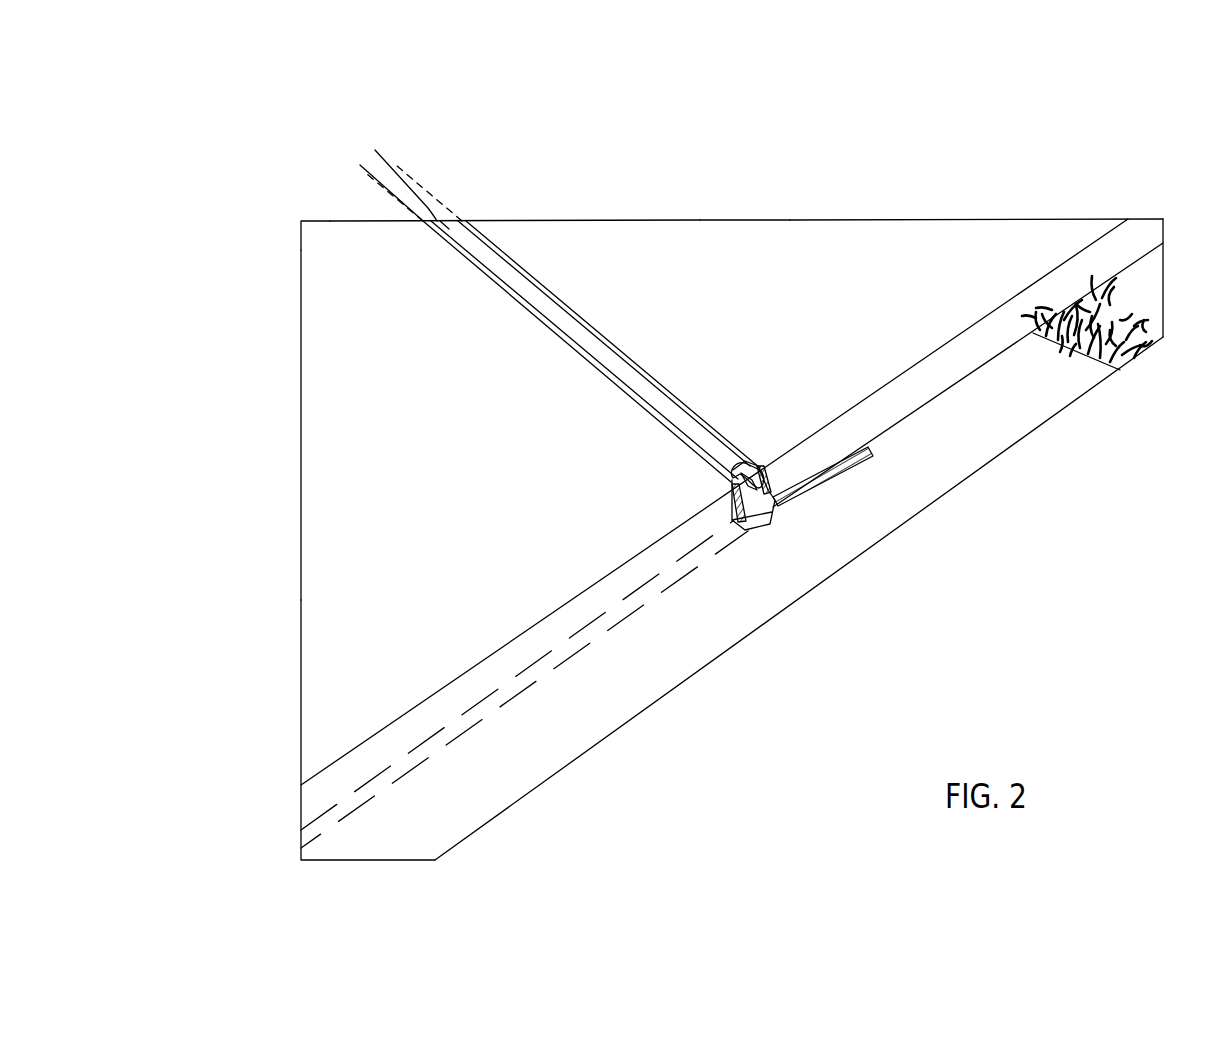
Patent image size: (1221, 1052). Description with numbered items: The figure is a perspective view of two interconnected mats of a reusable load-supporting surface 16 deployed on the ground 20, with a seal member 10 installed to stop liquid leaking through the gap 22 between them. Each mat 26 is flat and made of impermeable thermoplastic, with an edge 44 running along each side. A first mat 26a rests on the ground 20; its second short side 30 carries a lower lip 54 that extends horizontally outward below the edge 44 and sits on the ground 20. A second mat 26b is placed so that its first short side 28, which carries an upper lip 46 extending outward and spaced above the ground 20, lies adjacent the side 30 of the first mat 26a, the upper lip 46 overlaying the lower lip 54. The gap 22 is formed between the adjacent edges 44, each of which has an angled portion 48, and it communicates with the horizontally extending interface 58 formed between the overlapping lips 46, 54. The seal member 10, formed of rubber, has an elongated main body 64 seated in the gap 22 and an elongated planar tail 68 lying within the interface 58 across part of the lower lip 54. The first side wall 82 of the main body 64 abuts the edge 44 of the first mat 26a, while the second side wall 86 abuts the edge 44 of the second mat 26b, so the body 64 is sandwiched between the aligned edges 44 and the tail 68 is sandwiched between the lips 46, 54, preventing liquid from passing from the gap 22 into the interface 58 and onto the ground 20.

The seal member 10 is at (445, 212).
The load-supporting surface 16 is at (836, 657).
The ground 20 is at (1155, 283).
The gap 22 is at (342, 197).
The mat 26 is at (767, 212).
The first mat 26a is at (300, 613).
The second mat 26b is at (808, 218).
The first short side 28 is at (632, 212).
The second short side 30 is at (316, 214).
The edge 44 is at (1045, 296).
The upper lip 46 is at (858, 310).
The angled portion 48 is at (778, 497).
The lower lip 54 is at (1073, 387).
The interface 58 is at (995, 367).
The main body 64 is at (368, 152).
The tail 68 is at (853, 474).
The first side wall 82 is at (727, 506).
The second side wall 86 is at (776, 485).